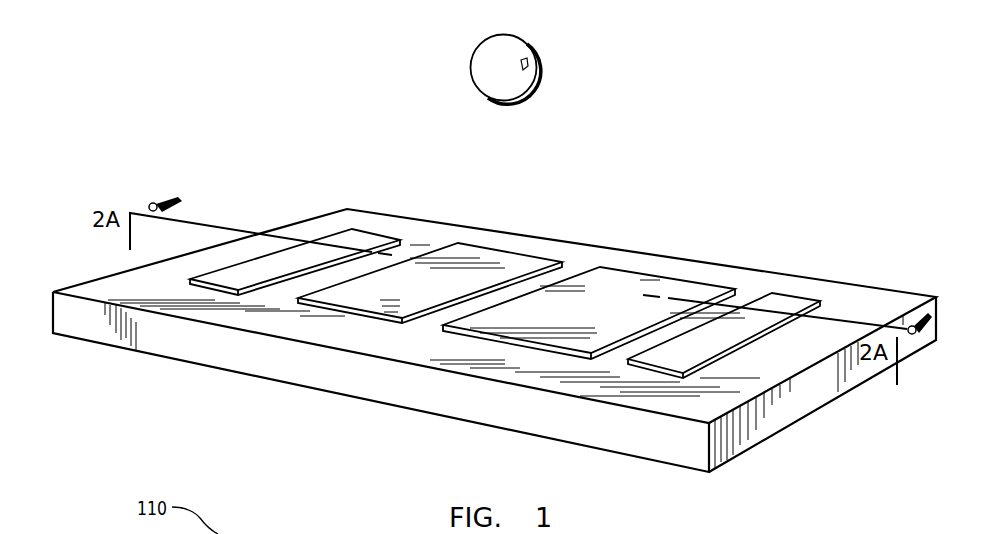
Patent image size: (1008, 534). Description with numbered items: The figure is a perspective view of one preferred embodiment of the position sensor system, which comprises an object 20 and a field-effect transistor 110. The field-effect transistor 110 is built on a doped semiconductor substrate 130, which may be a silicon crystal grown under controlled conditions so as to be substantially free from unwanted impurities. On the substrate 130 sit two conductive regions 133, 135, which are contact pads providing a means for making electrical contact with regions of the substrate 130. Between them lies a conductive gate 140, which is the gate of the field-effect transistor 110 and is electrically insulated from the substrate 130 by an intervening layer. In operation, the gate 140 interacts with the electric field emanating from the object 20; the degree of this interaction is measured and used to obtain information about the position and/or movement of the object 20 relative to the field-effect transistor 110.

The object 20 is at (483, 52).
The field-effect transistor 110 is at (325, 168).
The doped semiconductor substrate 130 is at (677, 435).
The conductive region 133 is at (352, 240).
The conductive region 135 is at (785, 303).
The conductive gate 140 is at (617, 282).